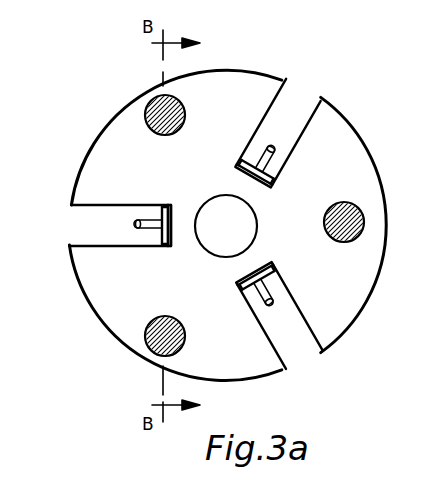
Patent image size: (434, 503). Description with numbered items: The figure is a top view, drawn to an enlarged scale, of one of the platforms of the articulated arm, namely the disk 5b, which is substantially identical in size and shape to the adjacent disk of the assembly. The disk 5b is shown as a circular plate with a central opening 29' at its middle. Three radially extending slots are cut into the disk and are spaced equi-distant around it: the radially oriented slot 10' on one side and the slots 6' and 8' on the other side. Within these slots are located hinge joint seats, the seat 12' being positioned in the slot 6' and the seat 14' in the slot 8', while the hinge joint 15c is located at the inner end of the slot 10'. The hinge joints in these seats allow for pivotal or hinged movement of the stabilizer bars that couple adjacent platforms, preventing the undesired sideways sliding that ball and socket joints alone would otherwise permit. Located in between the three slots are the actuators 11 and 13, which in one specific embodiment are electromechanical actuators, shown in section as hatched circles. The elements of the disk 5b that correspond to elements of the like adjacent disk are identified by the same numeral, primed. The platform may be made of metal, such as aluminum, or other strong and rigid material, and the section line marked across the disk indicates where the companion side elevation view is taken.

The disk 5b is at (347, 128).
The actuator 13 is at (185, 116).
The actuator 11 is at (185, 337).
The central opening 29' is at (226, 226).
The radially oriented slot 10' is at (102, 225).
The hinge joint 15c is at (167, 210).
The radially extending slot 6' is at (278, 126).
The hinge joint seat 12' is at (283, 174).
The radially extending slot 8' is at (279, 327).
The hinge joint seat 14' is at (279, 275).